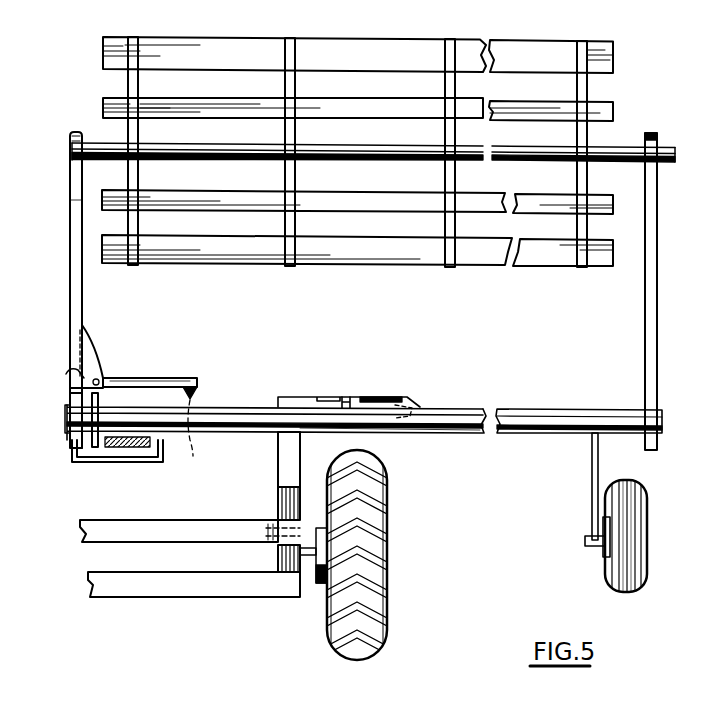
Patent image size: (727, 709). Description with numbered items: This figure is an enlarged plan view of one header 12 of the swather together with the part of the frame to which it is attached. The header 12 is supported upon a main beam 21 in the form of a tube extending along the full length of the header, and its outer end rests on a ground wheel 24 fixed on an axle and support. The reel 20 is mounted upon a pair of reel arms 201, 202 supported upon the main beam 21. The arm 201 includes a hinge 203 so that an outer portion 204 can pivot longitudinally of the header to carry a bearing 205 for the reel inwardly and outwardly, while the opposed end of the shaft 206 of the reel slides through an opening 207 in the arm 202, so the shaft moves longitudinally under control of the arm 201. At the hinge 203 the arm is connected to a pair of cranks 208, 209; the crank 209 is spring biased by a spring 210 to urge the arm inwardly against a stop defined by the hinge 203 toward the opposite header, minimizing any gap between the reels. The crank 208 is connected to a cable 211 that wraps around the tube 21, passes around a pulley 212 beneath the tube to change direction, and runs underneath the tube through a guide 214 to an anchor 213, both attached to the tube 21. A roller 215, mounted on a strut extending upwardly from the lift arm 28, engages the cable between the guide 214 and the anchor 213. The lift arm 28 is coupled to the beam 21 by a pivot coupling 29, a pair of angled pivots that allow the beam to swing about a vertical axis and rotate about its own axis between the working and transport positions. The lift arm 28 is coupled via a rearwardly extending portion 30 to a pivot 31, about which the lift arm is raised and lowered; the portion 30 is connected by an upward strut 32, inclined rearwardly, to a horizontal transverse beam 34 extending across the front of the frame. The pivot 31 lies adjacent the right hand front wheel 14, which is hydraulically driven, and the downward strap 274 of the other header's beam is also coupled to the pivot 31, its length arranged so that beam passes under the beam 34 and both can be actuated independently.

The header 12 is at (422, 39).
The front wheel 14 is at (387, 651).
The reel 20 is at (295, 39).
The main beam 21 is at (588, 388).
The ground wheel 24 is at (647, 512).
The lift arm 28 is at (348, 380).
The pivot coupling 29 is at (405, 408).
The rearwardly extending portion 30 is at (278, 480).
The pivot 31 is at (300, 530).
The upward strut 32 is at (278, 508).
The horizontal transverse beam 34 is at (182, 500).
The reel arm 201 is at (60, 234).
The reel arm 202 is at (657, 285).
The hinge 203 is at (68, 374).
The outer portion 204 is at (70, 294).
The bearing 205 is at (72, 163).
The shaft 206 is at (394, 158).
The opening 207 is at (660, 178).
The crank 208 is at (122, 378).
The crank 209 is at (104, 400).
The spring 210 is at (138, 460).
The cable 211 is at (195, 400).
The pulley 212 is at (209, 437).
The anchor 213 is at (376, 435).
The guide 214 is at (319, 396).
The roller 215 is at (360, 398).
The strap 274 is at (274, 549).